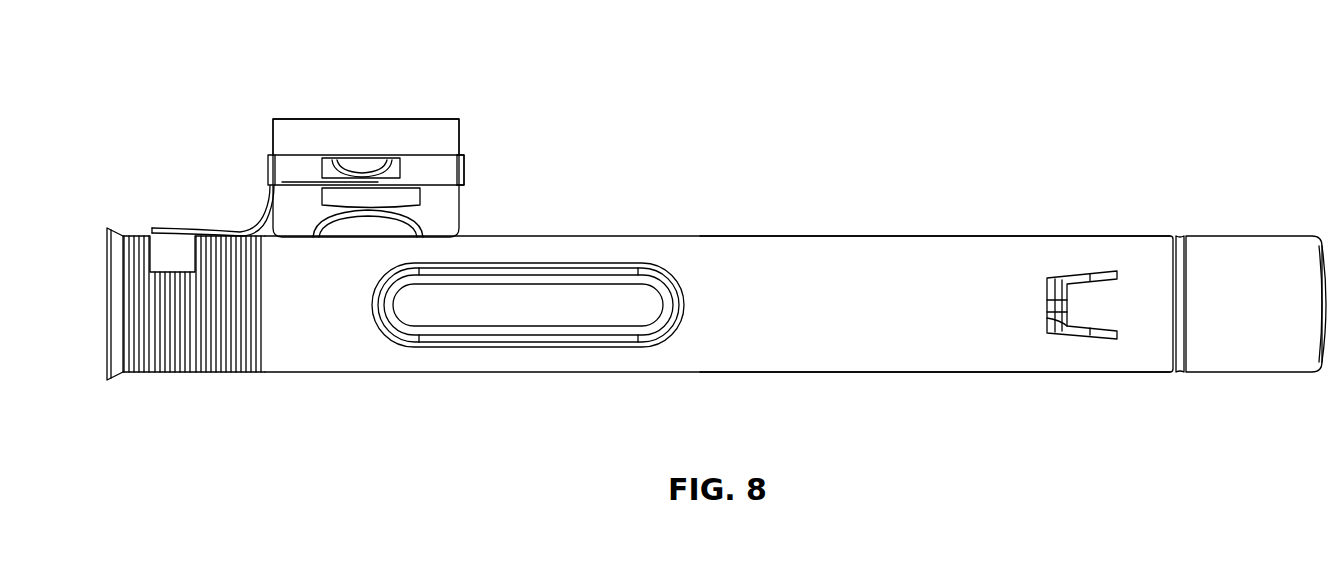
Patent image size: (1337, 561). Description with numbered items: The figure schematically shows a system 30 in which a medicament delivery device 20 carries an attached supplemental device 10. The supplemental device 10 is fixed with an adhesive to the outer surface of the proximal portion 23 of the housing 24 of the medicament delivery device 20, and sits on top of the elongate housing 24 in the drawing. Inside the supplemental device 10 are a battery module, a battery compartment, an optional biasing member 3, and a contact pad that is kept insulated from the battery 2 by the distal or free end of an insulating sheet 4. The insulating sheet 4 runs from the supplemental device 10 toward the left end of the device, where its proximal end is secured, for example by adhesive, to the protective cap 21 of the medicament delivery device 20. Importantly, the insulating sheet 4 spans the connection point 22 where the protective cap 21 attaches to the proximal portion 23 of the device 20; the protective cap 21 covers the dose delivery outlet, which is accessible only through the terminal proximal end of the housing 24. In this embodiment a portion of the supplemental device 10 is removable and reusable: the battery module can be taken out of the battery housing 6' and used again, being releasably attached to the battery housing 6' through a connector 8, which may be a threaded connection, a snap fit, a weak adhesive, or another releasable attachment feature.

The battery 2 is at (332, 193).
The biasing member 3 is at (372, 160).
The insulating sheet 4 is at (247, 227).
The battery housing 6' is at (414, 212).
The connector 8 is at (466, 170).
The supplemental device 10 is at (383, 157).
The medicament delivery device 20 is at (928, 197).
The protective cap 21 is at (190, 352).
The connection point 22 is at (257, 375).
The proximal portion 23 is at (343, 330).
The housing 24 is at (875, 330).
The system 30 is at (360, 144).